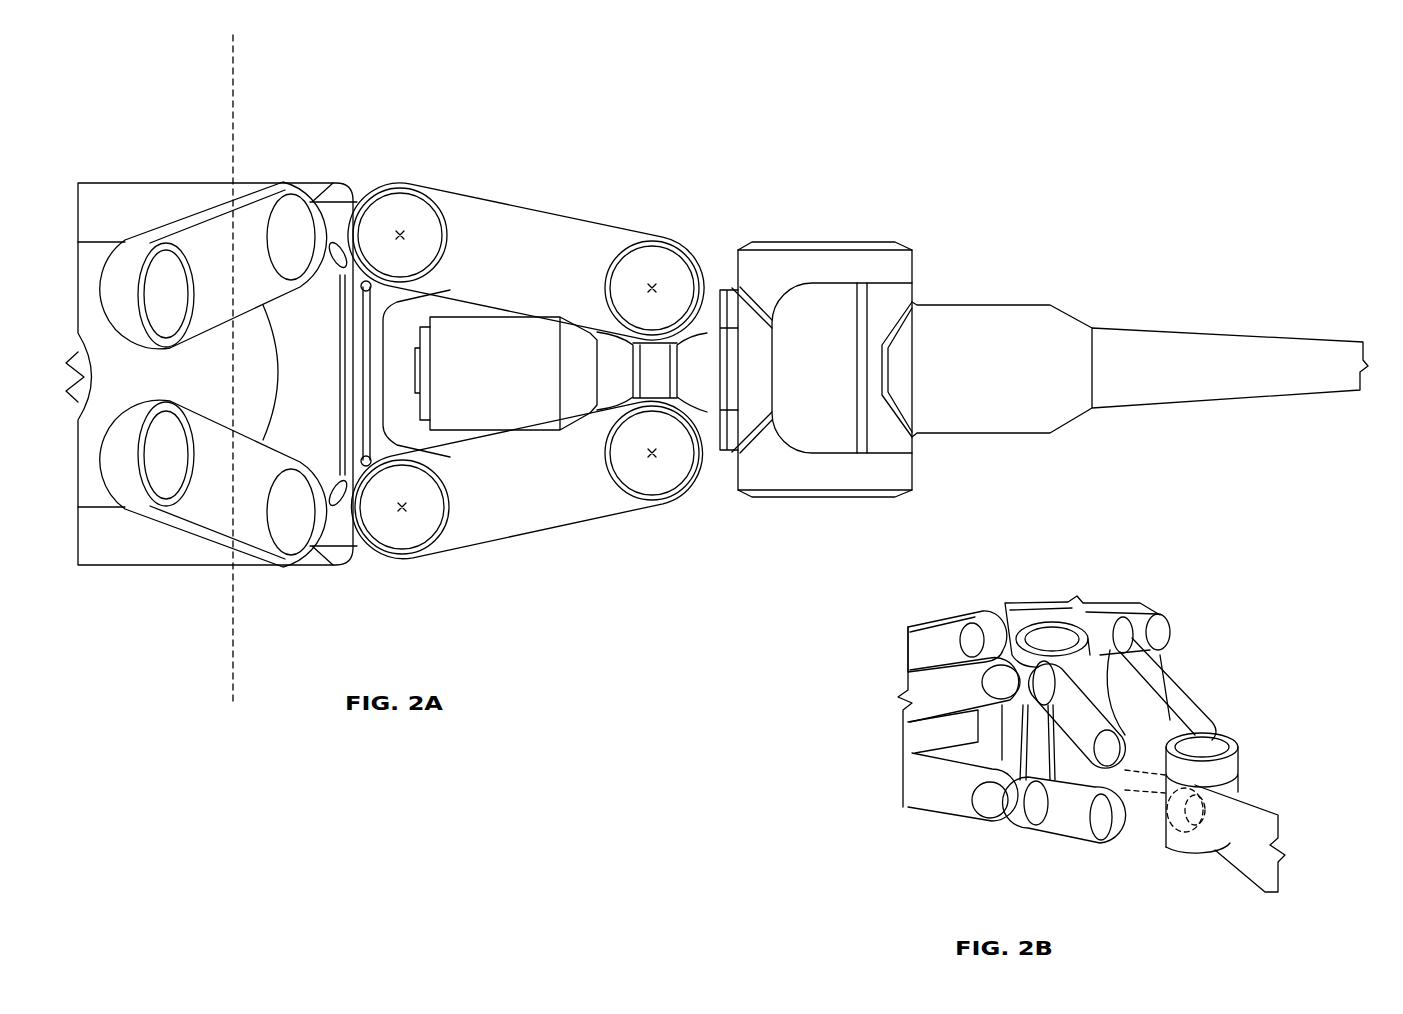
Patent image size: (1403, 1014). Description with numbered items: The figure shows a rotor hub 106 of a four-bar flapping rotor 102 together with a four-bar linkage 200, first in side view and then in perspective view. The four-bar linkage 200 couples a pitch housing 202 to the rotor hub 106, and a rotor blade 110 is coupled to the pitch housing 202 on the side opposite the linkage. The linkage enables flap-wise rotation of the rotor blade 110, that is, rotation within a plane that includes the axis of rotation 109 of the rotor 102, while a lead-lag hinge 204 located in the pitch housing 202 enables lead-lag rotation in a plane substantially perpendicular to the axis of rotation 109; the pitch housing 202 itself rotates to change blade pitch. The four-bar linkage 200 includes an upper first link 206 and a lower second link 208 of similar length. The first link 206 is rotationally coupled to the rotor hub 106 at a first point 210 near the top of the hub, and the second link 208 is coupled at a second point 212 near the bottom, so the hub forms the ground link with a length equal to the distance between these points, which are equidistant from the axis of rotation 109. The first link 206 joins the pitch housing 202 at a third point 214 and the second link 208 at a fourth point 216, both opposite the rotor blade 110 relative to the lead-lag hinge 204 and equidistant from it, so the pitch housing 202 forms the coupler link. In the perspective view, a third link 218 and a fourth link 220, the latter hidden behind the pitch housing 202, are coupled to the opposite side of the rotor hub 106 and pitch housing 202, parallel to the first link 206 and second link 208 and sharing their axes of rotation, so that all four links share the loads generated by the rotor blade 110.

In FIG. 2A, the four-bar flapping rotor 102 is at (392, 116).
In FIG. 2B, the four-bar flapping rotor 102 is at (1005, 575).
In FIG. 2A, the rotor hub 106 is at (260, 178).
In FIG. 2B, the rotor hub 106 is at (1130, 632).
In FIG. 2A, the axis of rotation 109 is at (233, 72).
In FIG. 2A, the rotor blade 110 is at (1155, 322).
In FIG. 2A, the four-bar linkage 200 is at (298, 582).
In FIG. 2B, the four-bar linkage 200 is at (913, 597).
In FIG. 2A, the pitch housing 202 is at (749, 490).
In FIG. 2B, the pitch housing 202 is at (1193, 863).
In FIG. 2A, the lead-lag hinge 204 is at (835, 243).
In FIG. 2A, the first link 206 is at (578, 238).
In FIG. 2B, the first link 206 is at (1082, 752).
In FIG. 2A, the second link 208 is at (558, 513).
In FIG. 2B, the second link 208 is at (1075, 838).
In FIG. 2A, the first point 210 is at (405, 236).
In FIG. 2A, the second point 212 is at (406, 507).
In FIG. 2A, the third point 214 is at (656, 286).
In FIG. 2A, the fourth point 216 is at (656, 456).
In FIG. 2B, the third link 218 is at (1175, 700).
In FIG. 2B, the fourth link 220 is at (1160, 845).